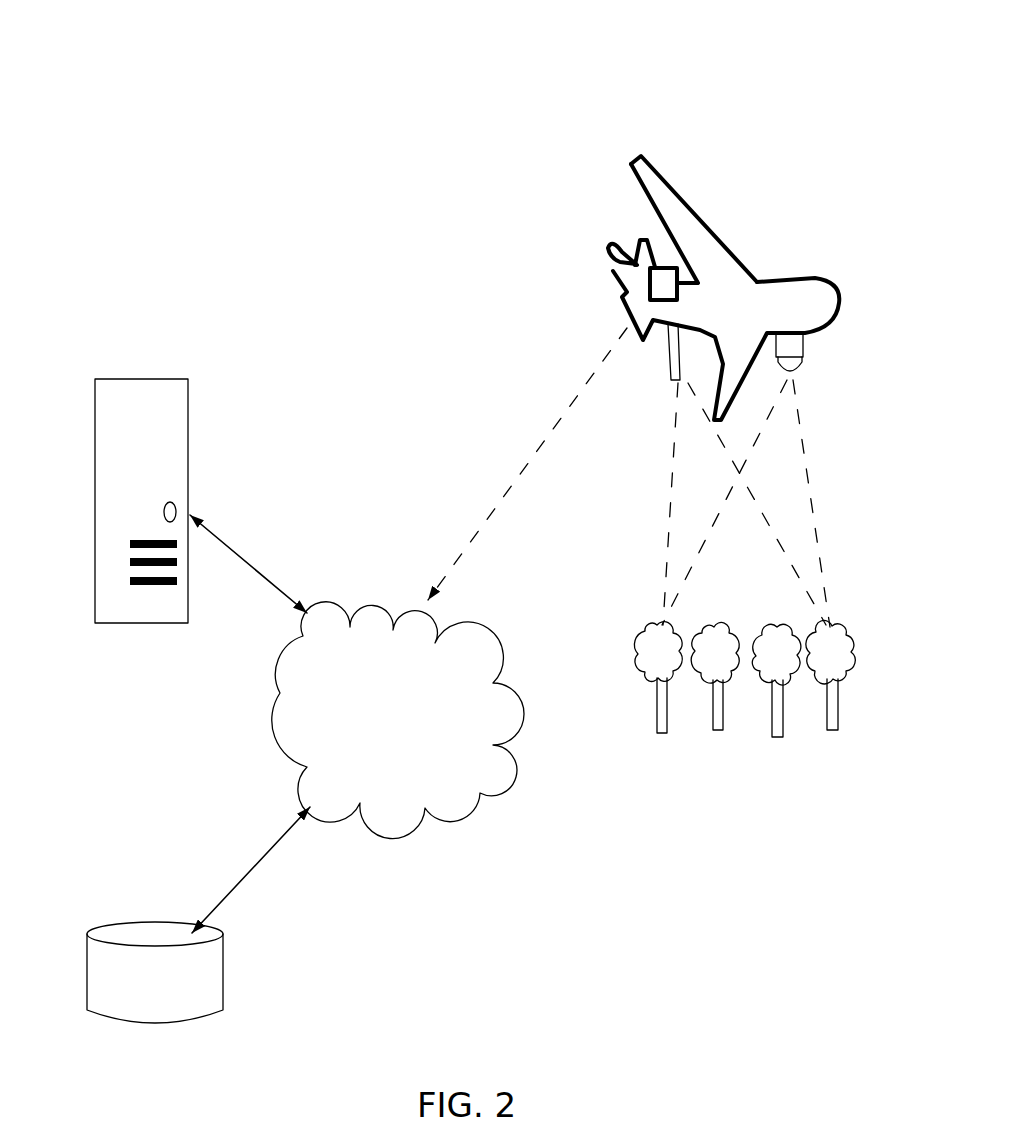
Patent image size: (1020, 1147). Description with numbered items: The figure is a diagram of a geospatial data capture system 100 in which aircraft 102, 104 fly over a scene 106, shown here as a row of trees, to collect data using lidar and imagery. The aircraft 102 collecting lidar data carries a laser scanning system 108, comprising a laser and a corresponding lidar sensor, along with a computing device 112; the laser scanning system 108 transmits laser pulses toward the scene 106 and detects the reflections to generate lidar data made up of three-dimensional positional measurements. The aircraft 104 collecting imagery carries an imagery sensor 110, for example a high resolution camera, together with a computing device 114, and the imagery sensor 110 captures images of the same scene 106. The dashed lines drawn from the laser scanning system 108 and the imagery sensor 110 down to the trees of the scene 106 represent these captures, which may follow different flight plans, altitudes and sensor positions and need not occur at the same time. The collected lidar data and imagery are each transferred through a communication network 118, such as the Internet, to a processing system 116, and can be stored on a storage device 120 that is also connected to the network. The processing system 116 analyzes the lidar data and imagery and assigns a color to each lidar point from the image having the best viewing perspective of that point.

The geospatial data capture system 100 is at (705, 45).
The aircraft 102 is at (784, 277).
The aircraft 104 is at (711, 283).
The scene 106 is at (778, 737).
The laser scanning system 108 is at (669, 378).
The imagery sensor 110 is at (805, 347).
The computing device 112 is at (643, 240).
The computing device 114 is at (596, 221).
The processing system 116 is at (105, 379).
The communication network 118 is at (485, 630).
The storage device 120 is at (110, 928).